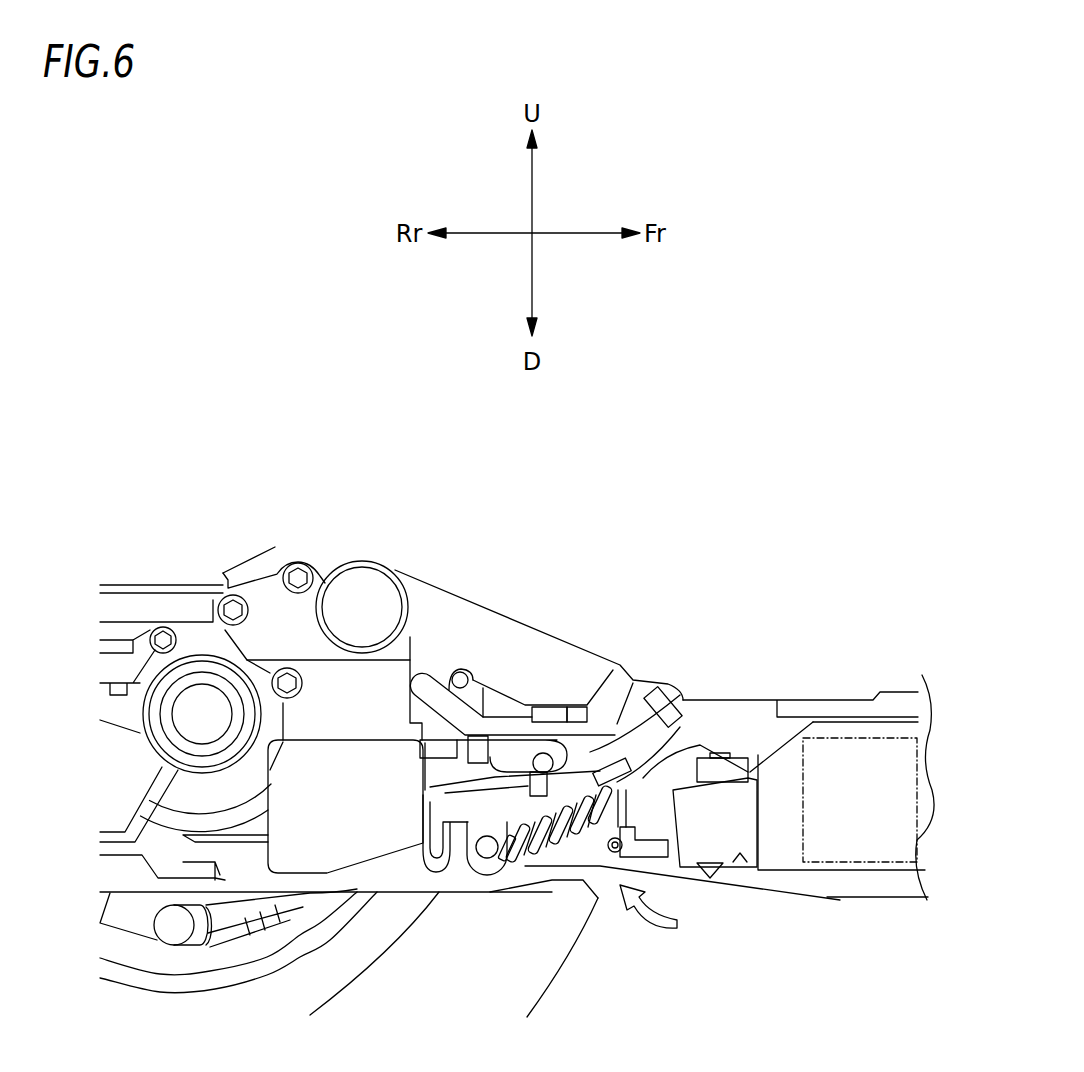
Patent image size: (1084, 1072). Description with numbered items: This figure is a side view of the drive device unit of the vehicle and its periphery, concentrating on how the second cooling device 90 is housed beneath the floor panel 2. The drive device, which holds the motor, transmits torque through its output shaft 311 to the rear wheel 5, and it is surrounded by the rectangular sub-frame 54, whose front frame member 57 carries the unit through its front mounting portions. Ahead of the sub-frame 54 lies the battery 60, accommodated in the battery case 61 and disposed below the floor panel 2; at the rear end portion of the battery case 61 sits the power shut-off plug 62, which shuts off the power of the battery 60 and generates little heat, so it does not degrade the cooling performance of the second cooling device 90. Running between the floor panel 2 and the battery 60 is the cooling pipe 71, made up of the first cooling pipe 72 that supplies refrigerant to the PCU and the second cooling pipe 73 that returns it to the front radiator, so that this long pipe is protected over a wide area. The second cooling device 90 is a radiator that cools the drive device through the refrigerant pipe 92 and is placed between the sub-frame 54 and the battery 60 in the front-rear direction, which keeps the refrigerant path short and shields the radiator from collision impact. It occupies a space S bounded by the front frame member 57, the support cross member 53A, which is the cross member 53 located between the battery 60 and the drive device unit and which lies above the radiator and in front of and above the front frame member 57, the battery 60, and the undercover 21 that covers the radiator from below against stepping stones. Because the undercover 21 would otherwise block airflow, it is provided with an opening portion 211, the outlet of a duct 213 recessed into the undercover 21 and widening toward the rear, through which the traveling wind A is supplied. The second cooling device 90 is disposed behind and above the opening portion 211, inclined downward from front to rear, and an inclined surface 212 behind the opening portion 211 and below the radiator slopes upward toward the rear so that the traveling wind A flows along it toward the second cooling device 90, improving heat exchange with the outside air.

The floor panel 2 is at (924, 730).
The rear wheel 5 is at (550, 987).
The undercover 21 is at (832, 895).
The cross member 53 is at (539, 640).
The support cross member 53A is at (500, 680).
The sub-frame 54 is at (363, 860).
The front frame member 57 is at (364, 881).
The battery 60 is at (903, 870).
The battery case 61 is at (873, 872).
The power shut-off plug 62 is at (720, 753).
The cooling pipe 71 is at (512, 609).
The first cooling pipe 72 is at (463, 680).
The second cooling pipe 73 is at (432, 682).
The second cooling device 90 is at (682, 891).
The refrigerant pipe 92 is at (580, 770).
The opening portion 211 is at (595, 851).
The inclined surface 212 is at (600, 880).
The duct 213 is at (713, 885).
The output shaft 311 is at (167, 730).
The space S is at (550, 887).
The traveling wind A is at (660, 921).